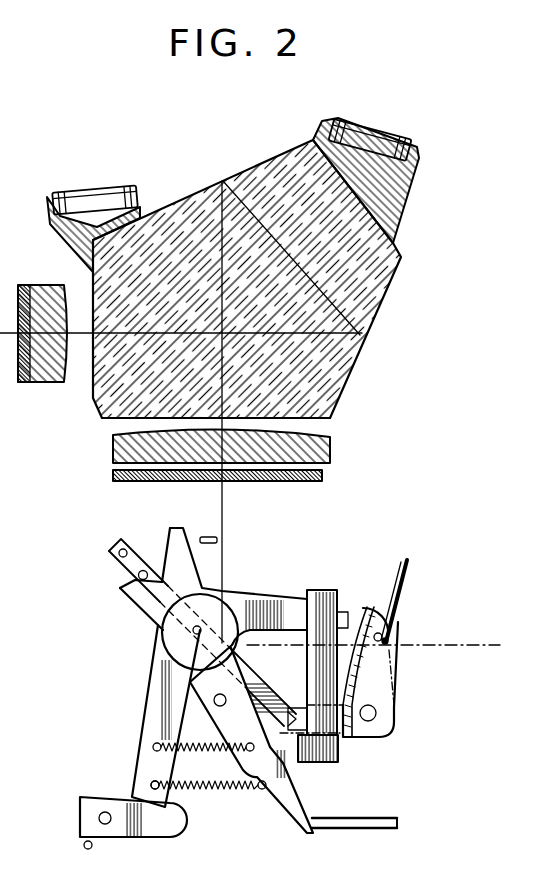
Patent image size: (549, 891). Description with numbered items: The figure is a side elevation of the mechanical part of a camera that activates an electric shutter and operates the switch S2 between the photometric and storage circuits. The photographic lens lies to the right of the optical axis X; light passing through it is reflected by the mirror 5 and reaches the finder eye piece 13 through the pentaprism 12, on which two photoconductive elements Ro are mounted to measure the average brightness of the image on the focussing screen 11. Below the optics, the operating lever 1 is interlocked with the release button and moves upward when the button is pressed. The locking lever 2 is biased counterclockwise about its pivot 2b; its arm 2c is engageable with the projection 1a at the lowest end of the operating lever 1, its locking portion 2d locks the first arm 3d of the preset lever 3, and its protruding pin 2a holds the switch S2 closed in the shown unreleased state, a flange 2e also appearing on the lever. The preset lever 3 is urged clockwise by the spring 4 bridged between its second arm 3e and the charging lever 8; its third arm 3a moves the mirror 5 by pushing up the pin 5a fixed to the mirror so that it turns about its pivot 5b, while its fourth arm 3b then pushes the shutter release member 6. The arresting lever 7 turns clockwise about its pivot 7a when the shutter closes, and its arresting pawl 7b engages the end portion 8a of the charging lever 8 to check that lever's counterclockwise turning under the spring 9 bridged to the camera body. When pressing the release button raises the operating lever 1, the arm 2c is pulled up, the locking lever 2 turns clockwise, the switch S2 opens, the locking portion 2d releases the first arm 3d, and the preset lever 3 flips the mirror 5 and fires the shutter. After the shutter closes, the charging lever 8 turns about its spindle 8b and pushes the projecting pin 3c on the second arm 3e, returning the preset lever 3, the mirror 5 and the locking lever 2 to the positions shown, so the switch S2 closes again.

The operating lever 1 is at (321, 749).
The projection 1a is at (300, 763).
The locking lever 2 is at (353, 646).
The protruding pin 2a is at (390, 638).
The pivot 2b is at (376, 718).
The arm 2c is at (292, 710).
The locking portion 2d is at (365, 607).
The flange of lever 2 2e is at (350, 648).
The preset lever 3 is at (224, 673).
The third arm 3a is at (133, 592).
The fourth arm 3b is at (180, 528).
The projecting pin 3c is at (215, 707).
The first arm 3d is at (342, 604).
The second arm 3e is at (292, 803).
The spring 4 is at (222, 754).
The mirror 5 is at (189, 623).
The pin 5a is at (143, 572).
The pivot 5b is at (110, 557).
The shutter release member 6 is at (217, 539).
The arresting lever 7 is at (147, 834).
The pivot 7a is at (108, 824).
The arresting pawl 7b is at (176, 803).
The charging lever 8 is at (148, 716).
The end portion 8a is at (150, 798).
The spindle 8b is at (187, 637).
The spring 9 is at (226, 790).
The focussing screen 11 is at (322, 478).
The pentaprism 12 is at (382, 302).
The finder eye piece 13 is at (50, 383).
The photoconductive element Ro is at (82, 190).
The switch S2 is at (398, 612).
The optical axis X is at (462, 647).